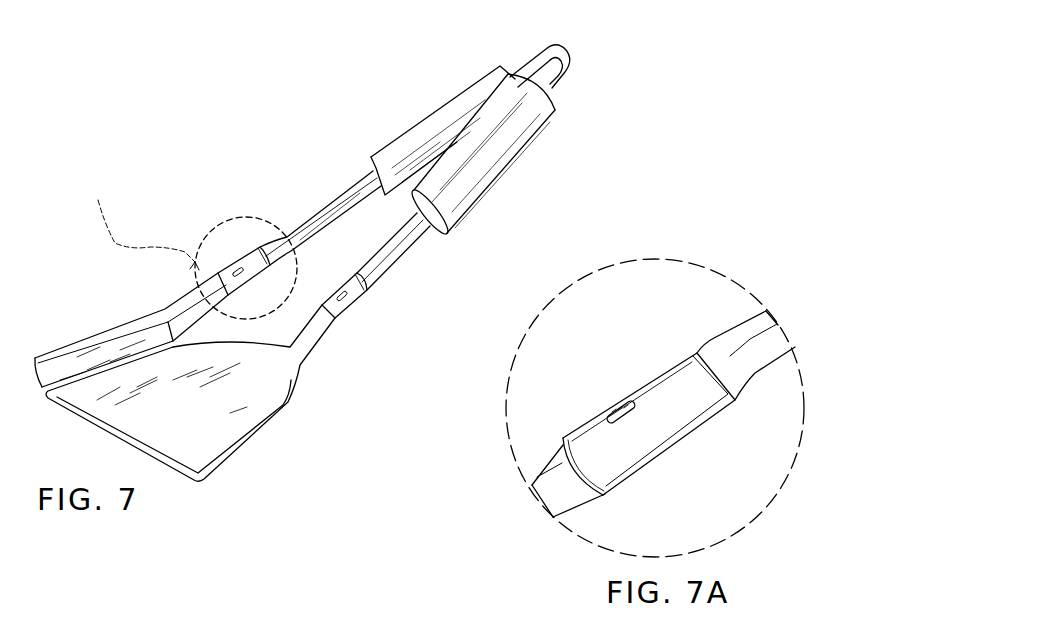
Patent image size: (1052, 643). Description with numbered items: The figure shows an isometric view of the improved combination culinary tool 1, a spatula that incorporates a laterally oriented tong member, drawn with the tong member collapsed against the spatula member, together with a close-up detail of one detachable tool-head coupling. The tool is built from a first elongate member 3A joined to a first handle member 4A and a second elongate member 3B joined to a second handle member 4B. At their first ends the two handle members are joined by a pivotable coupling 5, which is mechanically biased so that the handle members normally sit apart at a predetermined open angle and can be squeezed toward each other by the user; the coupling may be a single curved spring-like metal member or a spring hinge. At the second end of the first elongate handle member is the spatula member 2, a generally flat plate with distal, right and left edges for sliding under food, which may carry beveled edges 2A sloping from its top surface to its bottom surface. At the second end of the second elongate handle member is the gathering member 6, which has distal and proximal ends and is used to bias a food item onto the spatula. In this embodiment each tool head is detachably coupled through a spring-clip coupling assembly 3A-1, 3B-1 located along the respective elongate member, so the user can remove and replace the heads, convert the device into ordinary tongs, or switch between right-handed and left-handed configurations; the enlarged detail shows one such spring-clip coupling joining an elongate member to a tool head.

In FIG. 7, the improved combination culinary tool 1 is at (227, 173).
In FIG. 7, the spatula member 2 is at (228, 413).
In FIG. 7A, the spatula member 2 is at (486, 513).
In FIG. 7, the beveled edges 2A is at (237, 458).
In FIG. 7, the first elongate member 3A is at (403, 234).
In FIG. 7A, the first elongate member 3A is at (757, 305).
In FIG. 7, the second elongate member 3B is at (306, 214).
In FIG. 7A, the second elongate member 3B is at (765, 313).
In FIG. 7, the spring-clip coupling assembly 3A-1 is at (355, 321).
In FIG. 7A, the spring-clip coupling assembly 3A-1 is at (664, 325).
In FIG. 7, the spring-clip coupling assembly 3B-1 is at (227, 253).
In FIG. 7A, the spring-clip coupling assembly 3B-1 is at (632, 398).
In FIG. 7, the first handle member 4A is at (498, 182).
In FIG. 7, the second handle member 4B is at (433, 114).
In FIG. 7, the pivotable coupling 5 is at (563, 48).
In FIG. 7, the gathering member 6 is at (103, 332).
In FIG. 7A, the gathering member 6 is at (530, 488).